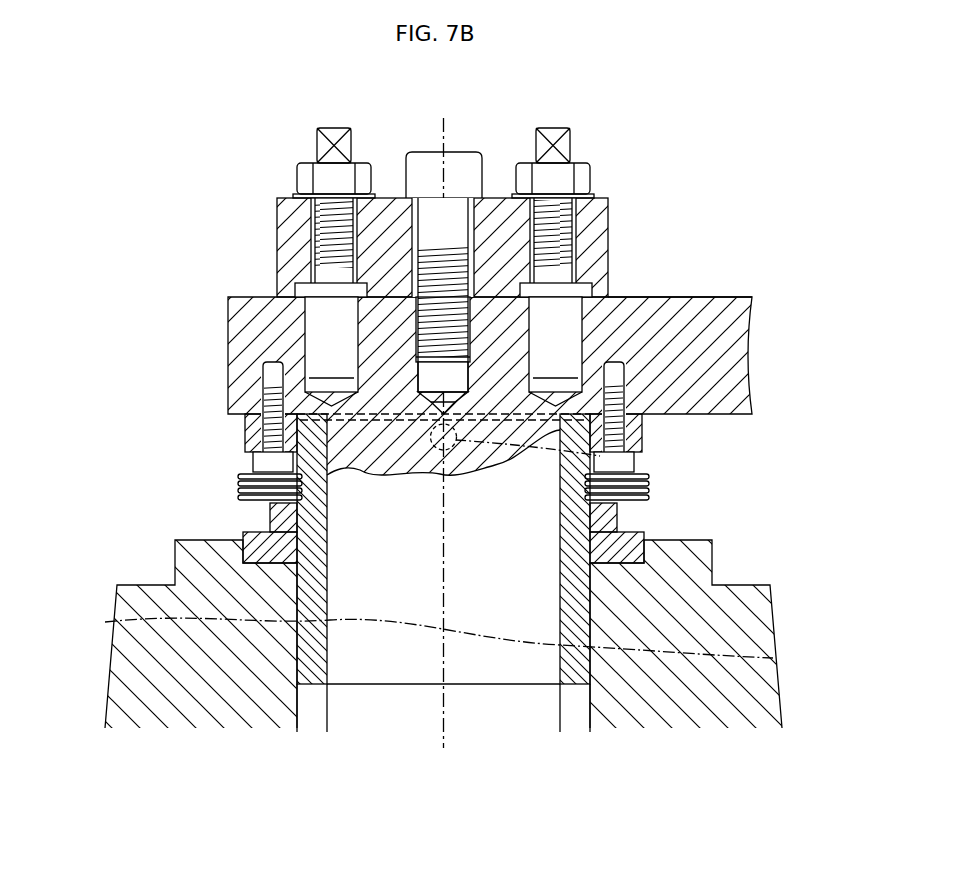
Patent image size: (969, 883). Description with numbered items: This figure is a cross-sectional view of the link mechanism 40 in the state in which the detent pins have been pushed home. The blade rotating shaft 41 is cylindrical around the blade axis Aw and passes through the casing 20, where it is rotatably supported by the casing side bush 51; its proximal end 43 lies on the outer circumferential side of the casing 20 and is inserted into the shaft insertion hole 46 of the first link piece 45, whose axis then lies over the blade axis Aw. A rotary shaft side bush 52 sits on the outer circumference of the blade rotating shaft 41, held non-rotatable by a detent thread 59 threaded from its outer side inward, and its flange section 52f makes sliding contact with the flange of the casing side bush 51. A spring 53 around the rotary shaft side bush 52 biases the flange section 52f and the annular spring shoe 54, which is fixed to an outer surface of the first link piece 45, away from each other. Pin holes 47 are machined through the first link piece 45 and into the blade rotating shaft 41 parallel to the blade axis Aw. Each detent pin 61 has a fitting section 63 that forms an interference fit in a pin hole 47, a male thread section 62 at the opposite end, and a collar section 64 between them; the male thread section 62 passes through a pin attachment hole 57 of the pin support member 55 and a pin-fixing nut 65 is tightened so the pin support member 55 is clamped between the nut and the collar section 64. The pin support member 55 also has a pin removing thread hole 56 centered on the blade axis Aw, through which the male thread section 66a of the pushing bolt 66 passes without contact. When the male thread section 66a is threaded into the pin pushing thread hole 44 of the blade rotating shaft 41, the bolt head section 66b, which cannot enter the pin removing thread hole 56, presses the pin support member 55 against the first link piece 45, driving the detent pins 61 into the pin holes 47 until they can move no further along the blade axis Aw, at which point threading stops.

The casing 20 is at (737, 579).
The link mechanism 40 is at (709, 292).
The blade rotating shaft 41 is at (340, 702).
The proximal end 43 is at (400, 405).
The pin pushing thread hole 44 is at (420, 315).
The first link piece 45 is at (750, 300).
The shaft insertion hole 46 is at (280, 408).
The pin hole 47 is at (355, 420).
The casing side bush 51 is at (303, 616).
The rotary shaft side bush 52 is at (320, 553).
The flange section 52f is at (270, 520).
The spring 53 is at (245, 484).
The spring shoe 54 is at (300, 425).
The pin support member 55 is at (278, 207).
The pin removing thread hole 56 is at (413, 262).
The pin attachment hole 57 is at (320, 262).
The detent thread 59 is at (600, 456).
The detent pin 61 is at (472, 192).
The male thread section 62 is at (562, 212).
The fitting section 63 is at (572, 318).
The collar section 64 is at (572, 224).
The pin-fixing nut 65 is at (300, 178).
The pushing bolt 66 is at (477, 240).
The male thread section 66a is at (484, 290).
The bolt head section 66b is at (466, 165).
The blade axis Aw is at (467, 643).